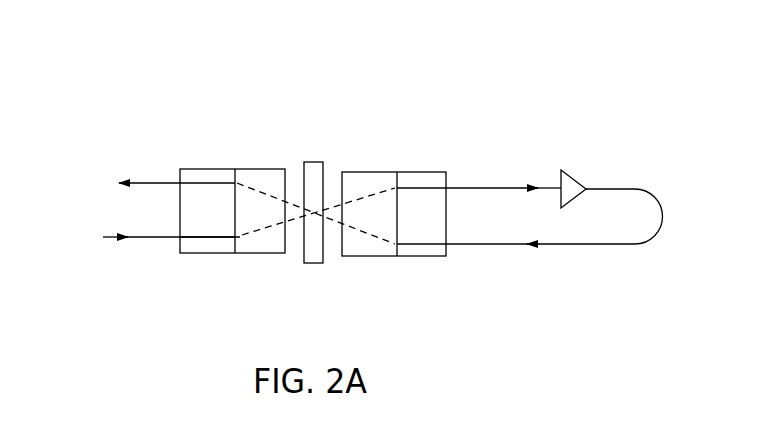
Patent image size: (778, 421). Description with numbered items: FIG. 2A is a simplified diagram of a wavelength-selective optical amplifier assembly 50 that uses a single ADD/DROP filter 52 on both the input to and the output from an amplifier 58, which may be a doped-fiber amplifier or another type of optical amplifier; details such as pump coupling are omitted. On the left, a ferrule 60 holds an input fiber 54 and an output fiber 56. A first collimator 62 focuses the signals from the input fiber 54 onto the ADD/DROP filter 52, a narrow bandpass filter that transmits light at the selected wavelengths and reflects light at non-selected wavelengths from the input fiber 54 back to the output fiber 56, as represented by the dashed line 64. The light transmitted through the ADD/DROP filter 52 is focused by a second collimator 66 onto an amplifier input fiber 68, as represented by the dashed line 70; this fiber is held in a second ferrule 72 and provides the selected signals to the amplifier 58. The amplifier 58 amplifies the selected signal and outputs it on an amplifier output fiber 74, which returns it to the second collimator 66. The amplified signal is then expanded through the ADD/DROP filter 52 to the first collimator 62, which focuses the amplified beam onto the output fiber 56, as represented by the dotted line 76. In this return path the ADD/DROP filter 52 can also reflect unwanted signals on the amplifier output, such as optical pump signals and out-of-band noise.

The optical amplifier assembly 50 is at (477, 103).
The ADD/DROP filter 52 is at (315, 161).
The input fiber 54 is at (110, 238).
The output fiber 56 is at (111, 180).
The amplifier 58 is at (573, 182).
The ferrule 60 is at (208, 168).
The first collimator 62 is at (243, 253).
The dashed line 64 is at (267, 207).
The second collimator 66 is at (383, 171).
The amplifier input fiber 68 is at (492, 187).
The dashed line 70 is at (375, 192).
The second ferrule 72 is at (418, 256).
The amplifier output fiber 74 is at (663, 217).
The dotted line 76 is at (269, 191).